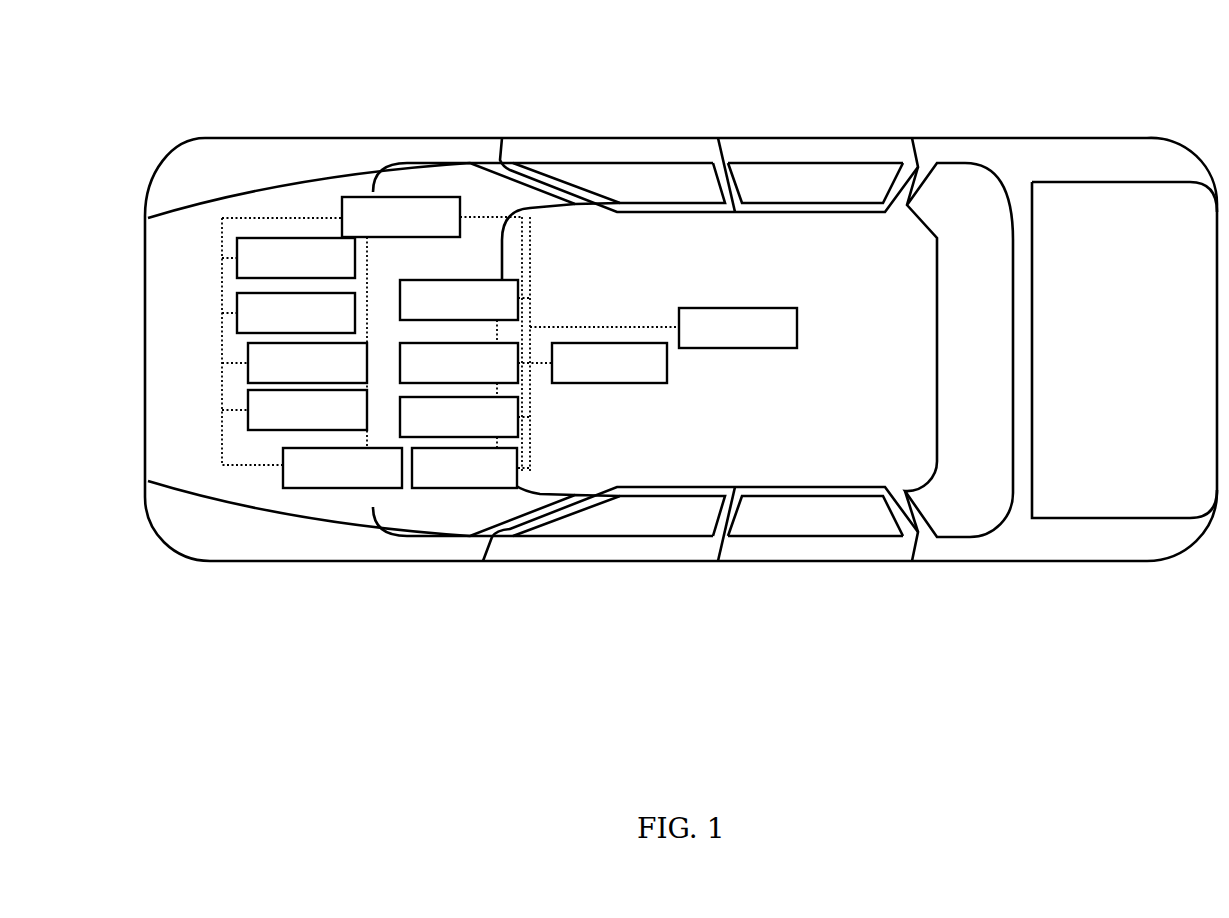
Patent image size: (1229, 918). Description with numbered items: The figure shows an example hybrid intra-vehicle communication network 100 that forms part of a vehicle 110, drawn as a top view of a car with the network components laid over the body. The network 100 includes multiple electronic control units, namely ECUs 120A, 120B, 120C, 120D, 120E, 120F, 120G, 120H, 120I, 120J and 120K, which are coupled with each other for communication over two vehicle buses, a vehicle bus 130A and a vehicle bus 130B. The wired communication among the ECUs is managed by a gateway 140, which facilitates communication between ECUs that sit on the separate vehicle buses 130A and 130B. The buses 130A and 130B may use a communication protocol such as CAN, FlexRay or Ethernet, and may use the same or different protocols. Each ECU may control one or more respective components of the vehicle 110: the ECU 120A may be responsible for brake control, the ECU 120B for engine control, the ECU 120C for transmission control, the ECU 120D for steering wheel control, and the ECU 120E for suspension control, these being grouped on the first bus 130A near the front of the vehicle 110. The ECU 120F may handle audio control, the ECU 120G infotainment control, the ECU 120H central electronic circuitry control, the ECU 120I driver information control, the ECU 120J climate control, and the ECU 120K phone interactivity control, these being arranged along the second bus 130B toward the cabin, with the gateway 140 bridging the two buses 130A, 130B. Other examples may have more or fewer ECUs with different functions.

The hybrid intra-vehicle communication network 100 is at (220, 73).
The vehicle 110 is at (785, 143).
The ECU 120A is at (318, 267).
The ECU 120B is at (318, 322).
The ECU 120C is at (329, 372).
The ECU 120D is at (329, 419).
The ECU 120E is at (364, 477).
The ECU 120F is at (481, 309).
The ECU 120G is at (481, 372).
The ECU 120H is at (481, 426).
The ECU 120I is at (483, 477).
The ECU 120J is at (631, 372).
The ECU 120K is at (760, 337).
The vehicle bus 130A is at (284, 212).
The vehicle bus 130B is at (497, 220).
The gateway 140 is at (417, 226).